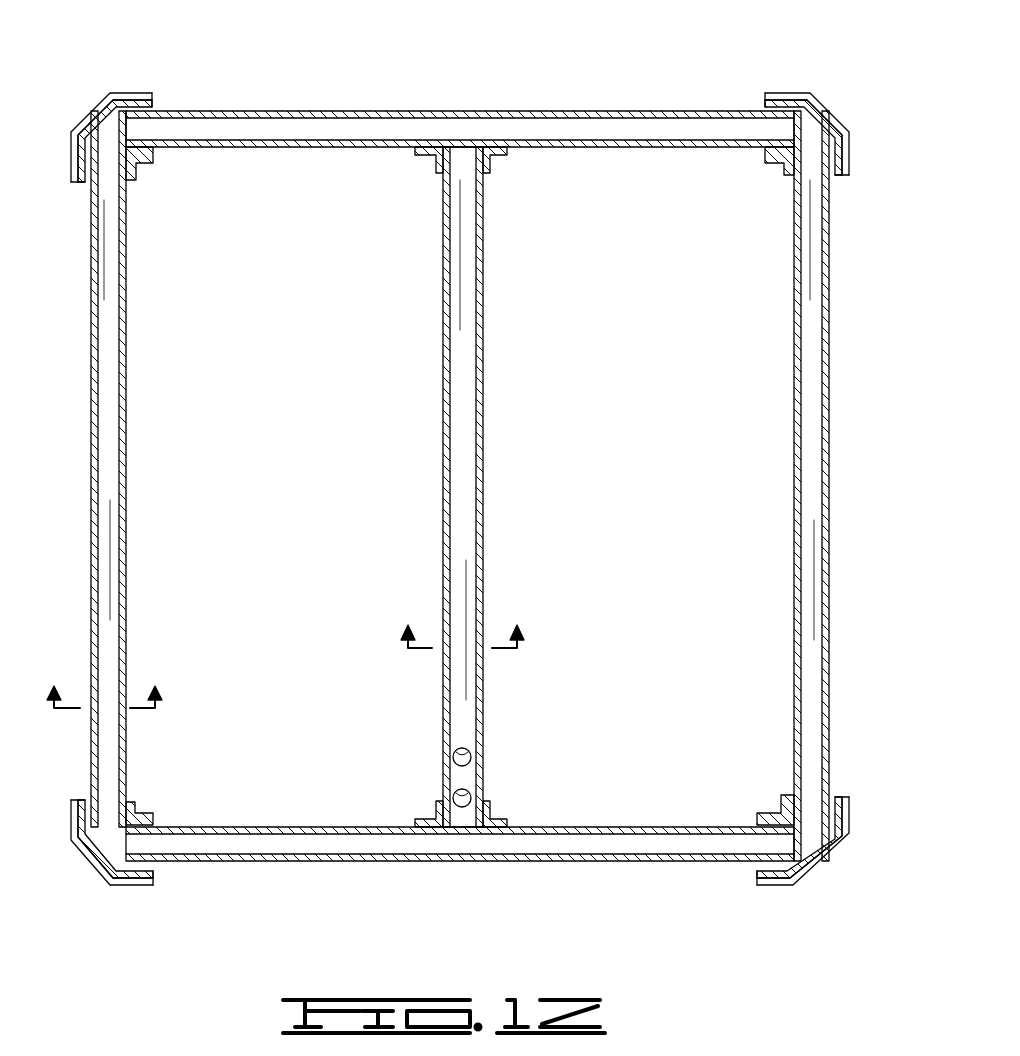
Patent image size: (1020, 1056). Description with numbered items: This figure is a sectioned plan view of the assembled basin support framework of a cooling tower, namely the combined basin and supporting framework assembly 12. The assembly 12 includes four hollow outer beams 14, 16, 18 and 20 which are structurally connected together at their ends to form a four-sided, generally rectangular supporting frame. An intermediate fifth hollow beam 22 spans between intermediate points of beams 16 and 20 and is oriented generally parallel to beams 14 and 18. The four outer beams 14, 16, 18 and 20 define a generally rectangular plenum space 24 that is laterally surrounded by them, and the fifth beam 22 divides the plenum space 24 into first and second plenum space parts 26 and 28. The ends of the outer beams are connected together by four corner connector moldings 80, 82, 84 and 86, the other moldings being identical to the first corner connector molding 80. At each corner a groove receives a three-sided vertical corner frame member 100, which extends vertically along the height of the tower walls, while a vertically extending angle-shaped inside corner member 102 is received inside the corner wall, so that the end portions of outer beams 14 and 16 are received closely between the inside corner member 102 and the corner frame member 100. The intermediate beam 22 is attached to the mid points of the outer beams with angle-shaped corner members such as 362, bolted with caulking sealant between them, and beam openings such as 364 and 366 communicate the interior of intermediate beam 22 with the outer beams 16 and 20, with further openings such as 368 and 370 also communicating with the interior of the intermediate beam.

The combined basin and supporting framework assembly 12 is at (802, 62).
The hollow outer beam 14 is at (91, 462).
The hollow outer beam 16 is at (550, 112).
The hollow outer beam 18 is at (830, 488).
The hollow outer beam 20 is at (565, 862).
The intermediate fifth hollow beam 22 is at (483, 490).
The plenum space 24 is at (450, 409).
The first plenum space part 26 is at (322, 420).
The second plenum space part 28 is at (645, 420).
The first corner connector molding 80 is at (135, 92).
The corner connector molding 82 is at (835, 108).
The corner connector molding 84 is at (826, 858).
The corner connector molding 86 is at (100, 866).
The three-sided vertical corner frame member 100 is at (108, 108).
The angle-shaped inside corner member 102 is at (137, 165).
The angle-shaped corner member 362 is at (436, 172).
The beam opening 364 is at (462, 829).
The beam opening 366 is at (462, 145).
The opening 368 is at (469, 752).
The opening 370 is at (469, 794).